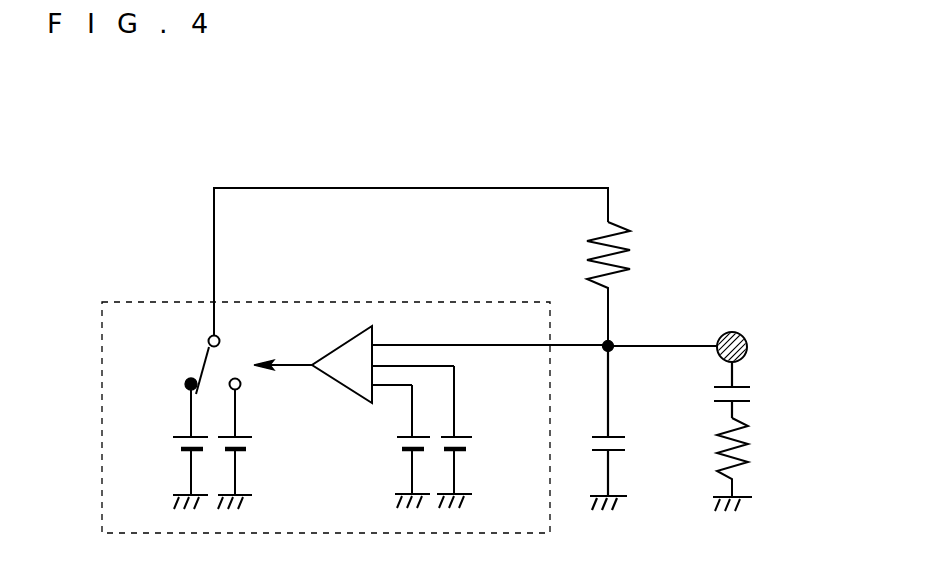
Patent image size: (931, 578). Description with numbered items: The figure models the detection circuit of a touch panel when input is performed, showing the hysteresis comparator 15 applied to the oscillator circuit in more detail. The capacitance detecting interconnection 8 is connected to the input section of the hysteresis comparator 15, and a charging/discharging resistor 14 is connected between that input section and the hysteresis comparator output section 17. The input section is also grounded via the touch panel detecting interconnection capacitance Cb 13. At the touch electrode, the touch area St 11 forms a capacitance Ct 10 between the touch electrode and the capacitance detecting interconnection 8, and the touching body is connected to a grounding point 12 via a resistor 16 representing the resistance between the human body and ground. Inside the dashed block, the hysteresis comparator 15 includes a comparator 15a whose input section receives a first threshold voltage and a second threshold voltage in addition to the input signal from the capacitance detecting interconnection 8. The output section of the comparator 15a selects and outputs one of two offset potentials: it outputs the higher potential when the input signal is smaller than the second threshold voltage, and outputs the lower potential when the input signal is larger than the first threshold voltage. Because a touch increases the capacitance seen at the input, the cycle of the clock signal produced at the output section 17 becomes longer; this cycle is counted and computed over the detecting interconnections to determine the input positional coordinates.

The hysteresis comparator output section 17 is at (418, 188).
The charging/discharging resistor 14 is at (633, 263).
The capacitance detecting interconnection 8 is at (667, 344).
The finger touch area St 11 is at (750, 348).
The capacitance Ct 10 is at (753, 395).
The resistor 16 is at (750, 449).
The grounding point 12 is at (753, 507).
The touch panel detecting interconnection capacitance Cb 13 is at (627, 444).
The hysteresis comparator 15 is at (344, 302).
The comparator 15a is at (336, 351).